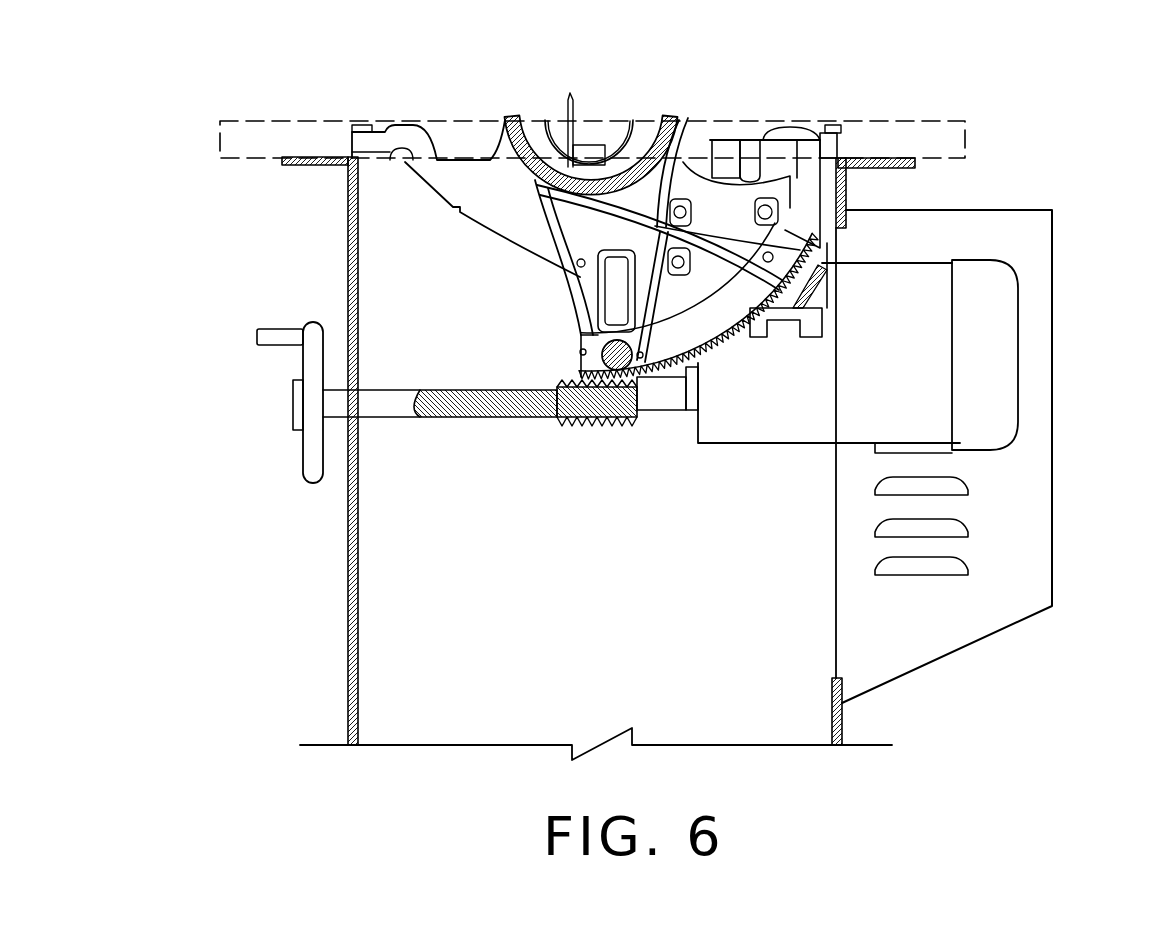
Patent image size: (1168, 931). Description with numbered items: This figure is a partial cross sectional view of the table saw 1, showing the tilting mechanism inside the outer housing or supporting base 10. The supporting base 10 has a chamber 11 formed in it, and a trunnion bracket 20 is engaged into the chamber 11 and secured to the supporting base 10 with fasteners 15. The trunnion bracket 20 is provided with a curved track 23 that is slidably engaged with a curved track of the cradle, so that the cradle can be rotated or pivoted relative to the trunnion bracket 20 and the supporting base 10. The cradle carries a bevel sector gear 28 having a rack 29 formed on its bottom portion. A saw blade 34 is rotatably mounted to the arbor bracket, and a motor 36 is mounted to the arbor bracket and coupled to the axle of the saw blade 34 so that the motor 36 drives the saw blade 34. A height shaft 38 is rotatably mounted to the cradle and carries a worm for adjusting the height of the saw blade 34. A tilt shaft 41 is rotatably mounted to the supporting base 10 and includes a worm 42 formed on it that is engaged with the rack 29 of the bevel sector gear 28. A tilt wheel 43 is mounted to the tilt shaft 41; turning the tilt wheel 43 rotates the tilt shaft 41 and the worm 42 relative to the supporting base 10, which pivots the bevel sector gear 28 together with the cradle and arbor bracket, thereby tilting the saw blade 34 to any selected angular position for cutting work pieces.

The table saw 1 is at (947, 80).
The supporting base 10 is at (346, 672).
The chamber 11 is at (355, 708).
The fasteners 15 is at (832, 122).
The trunnion bracket 20 is at (382, 140).
The curved track 23 is at (655, 150).
The bevel sector gear 28 is at (737, 213).
The rack 29 is at (700, 347).
The saw blade 34 is at (572, 107).
The motor 36 is at (1013, 370).
The height shaft 38 is at (597, 348).
The tilt shaft 41 is at (477, 417).
The worm 42 is at (607, 423).
The tilt wheel 43 is at (313, 459).